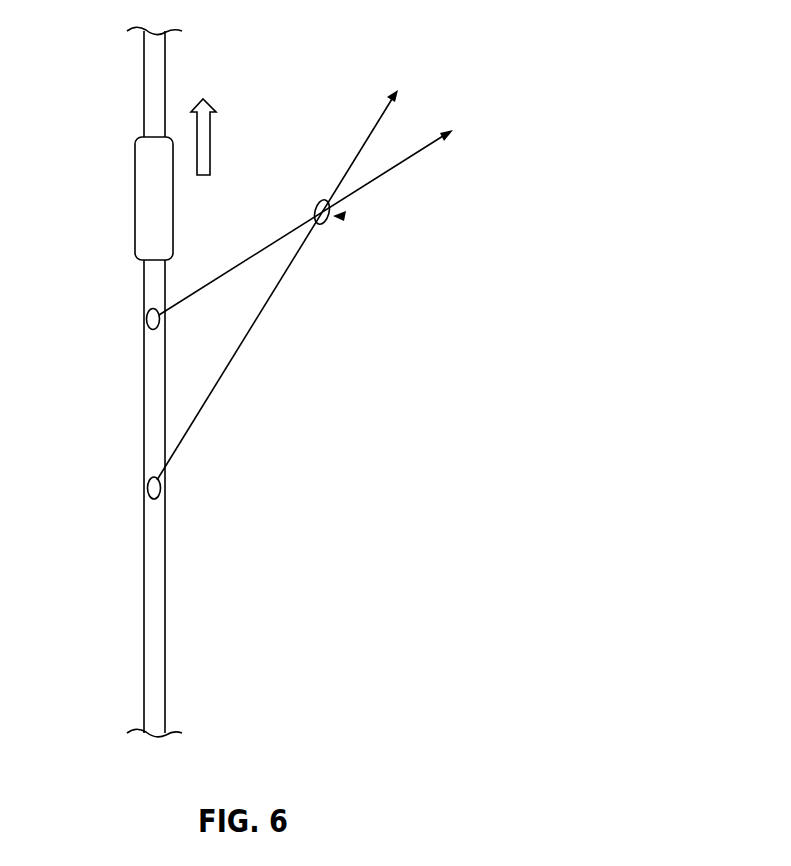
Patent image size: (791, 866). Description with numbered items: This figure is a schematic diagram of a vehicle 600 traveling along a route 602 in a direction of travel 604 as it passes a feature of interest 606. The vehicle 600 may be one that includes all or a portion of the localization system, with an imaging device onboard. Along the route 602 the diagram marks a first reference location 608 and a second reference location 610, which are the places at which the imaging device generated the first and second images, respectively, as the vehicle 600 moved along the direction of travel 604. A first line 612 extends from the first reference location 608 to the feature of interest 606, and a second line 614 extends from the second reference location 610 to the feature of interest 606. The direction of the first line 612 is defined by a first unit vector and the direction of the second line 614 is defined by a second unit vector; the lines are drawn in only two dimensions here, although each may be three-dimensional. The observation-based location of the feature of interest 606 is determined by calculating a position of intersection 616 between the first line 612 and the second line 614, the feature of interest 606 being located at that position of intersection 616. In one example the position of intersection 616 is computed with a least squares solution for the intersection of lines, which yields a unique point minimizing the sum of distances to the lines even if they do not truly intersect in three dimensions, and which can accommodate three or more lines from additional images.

The vehicle 600 is at (153, 200).
The route 602 is at (144, 70).
The direction of travel 604 is at (210, 143).
The feature of interest 606 is at (314, 206).
The first reference location 608 is at (148, 487).
The second reference location 610 is at (147, 318).
The first line 612 is at (243, 342).
The second line 614 is at (278, 241).
The position of intersection 616 is at (340, 216).